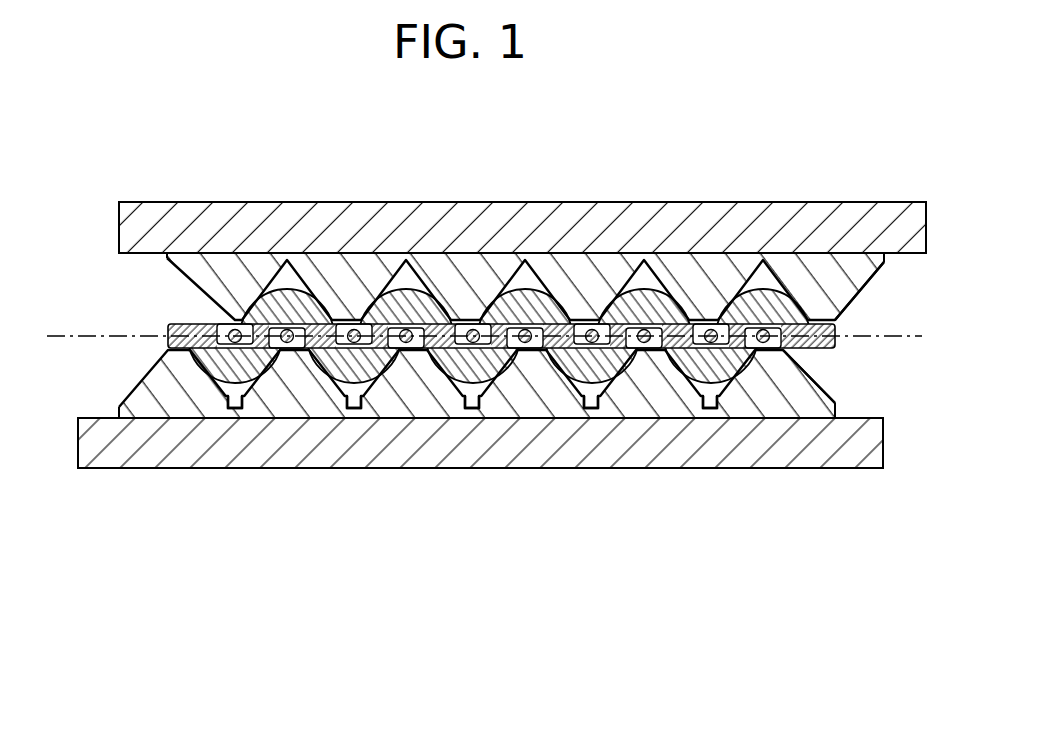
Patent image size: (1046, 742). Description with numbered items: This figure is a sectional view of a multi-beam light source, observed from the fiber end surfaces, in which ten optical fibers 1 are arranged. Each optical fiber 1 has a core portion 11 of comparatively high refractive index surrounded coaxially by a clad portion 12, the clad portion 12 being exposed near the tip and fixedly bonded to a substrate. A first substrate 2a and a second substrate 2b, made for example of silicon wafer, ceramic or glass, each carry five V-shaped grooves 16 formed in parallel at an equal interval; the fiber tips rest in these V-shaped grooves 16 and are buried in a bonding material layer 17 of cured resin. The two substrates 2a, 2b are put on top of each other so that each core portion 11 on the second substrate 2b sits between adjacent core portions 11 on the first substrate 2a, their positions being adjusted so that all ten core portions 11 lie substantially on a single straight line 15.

The optical fiber 1 is at (284, 289).
The first substrate 2a is at (208, 282).
The second substrate 2b is at (180, 378).
The core portion 11 is at (237, 332).
The clad portion 12 is at (303, 328).
The straight line 15 is at (67, 334).
The V-shaped groove 16 is at (226, 396).
The bonding material layer 17 is at (873, 292).